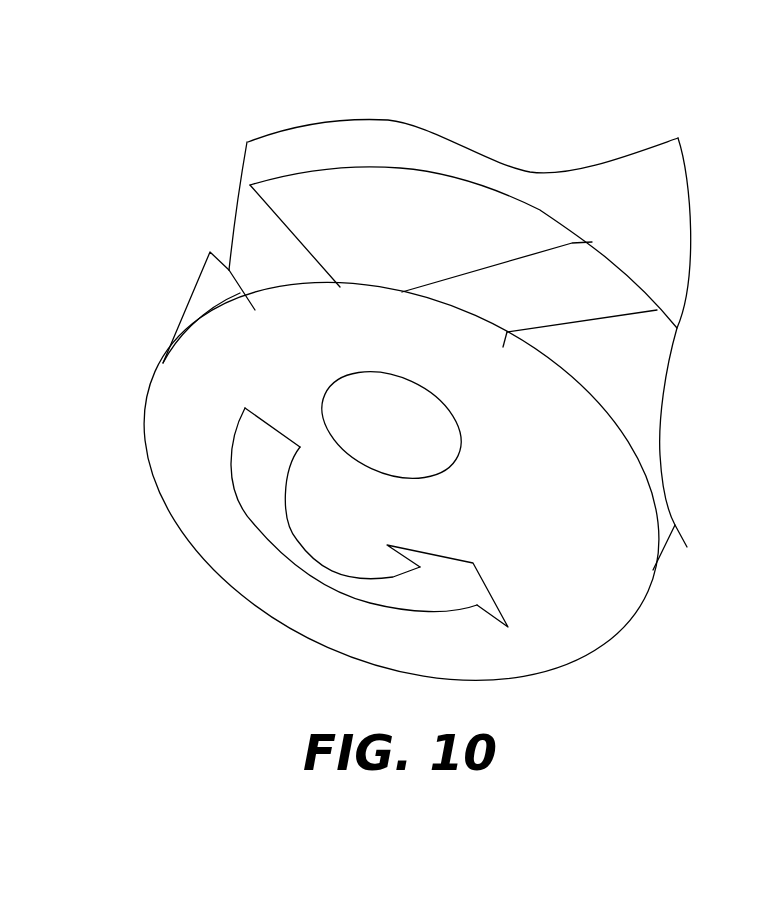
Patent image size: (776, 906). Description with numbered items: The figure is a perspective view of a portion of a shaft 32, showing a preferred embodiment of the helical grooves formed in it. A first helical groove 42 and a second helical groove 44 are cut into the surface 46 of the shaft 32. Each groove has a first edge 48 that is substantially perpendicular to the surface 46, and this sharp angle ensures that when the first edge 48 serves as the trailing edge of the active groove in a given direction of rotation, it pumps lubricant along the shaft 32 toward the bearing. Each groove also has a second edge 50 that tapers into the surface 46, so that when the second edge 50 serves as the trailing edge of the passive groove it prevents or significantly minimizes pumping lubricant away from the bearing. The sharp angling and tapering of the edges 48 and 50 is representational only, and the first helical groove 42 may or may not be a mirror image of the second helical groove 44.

The shaft 32 is at (216, 598).
The first helical groove 42 is at (597, 272).
The second helical groove 44 is at (243, 240).
The surface 46 is at (193, 312).
The first edge 48 is at (227, 287).
The second edge 50 is at (282, 213).